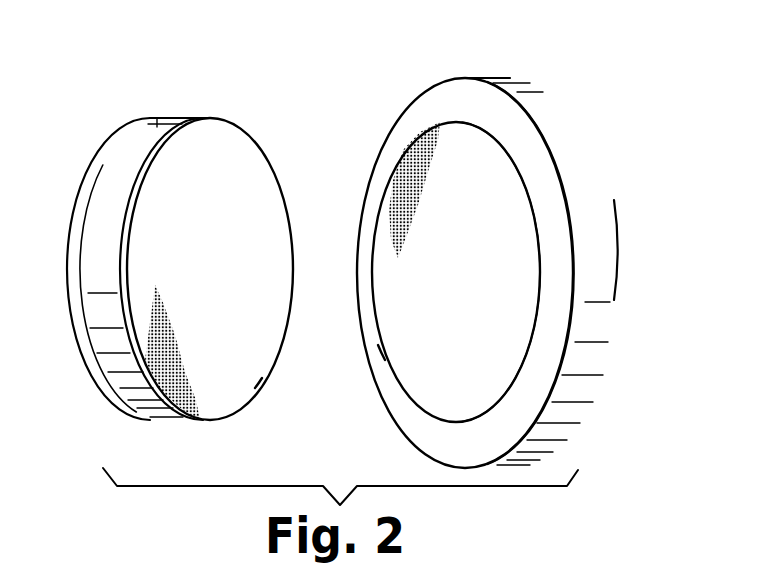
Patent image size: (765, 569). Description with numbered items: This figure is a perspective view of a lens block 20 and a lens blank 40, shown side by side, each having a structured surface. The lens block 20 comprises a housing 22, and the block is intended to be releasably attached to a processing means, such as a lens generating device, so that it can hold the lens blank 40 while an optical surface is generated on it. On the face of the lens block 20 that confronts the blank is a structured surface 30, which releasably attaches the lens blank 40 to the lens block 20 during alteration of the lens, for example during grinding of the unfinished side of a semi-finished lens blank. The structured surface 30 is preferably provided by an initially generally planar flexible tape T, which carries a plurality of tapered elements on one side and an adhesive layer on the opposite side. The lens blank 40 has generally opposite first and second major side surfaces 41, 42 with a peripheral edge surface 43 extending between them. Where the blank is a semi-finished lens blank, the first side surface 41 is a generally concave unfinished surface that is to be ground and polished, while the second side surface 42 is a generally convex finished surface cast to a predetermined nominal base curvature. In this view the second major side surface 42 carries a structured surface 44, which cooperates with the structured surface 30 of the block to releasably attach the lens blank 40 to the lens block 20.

The lens block 20 is at (74, 111).
The housing 22 is at (161, 105).
The structured surface 30 is at (273, 164).
The flexible tape T is at (372, 366).
The lens blank 40 is at (636, 385).
The first major side surface 41 is at (617, 237).
The second major side surface 42 is at (392, 417).
The peripheral edge surface 43 is at (575, 150).
The structured surface 44 is at (430, 102).